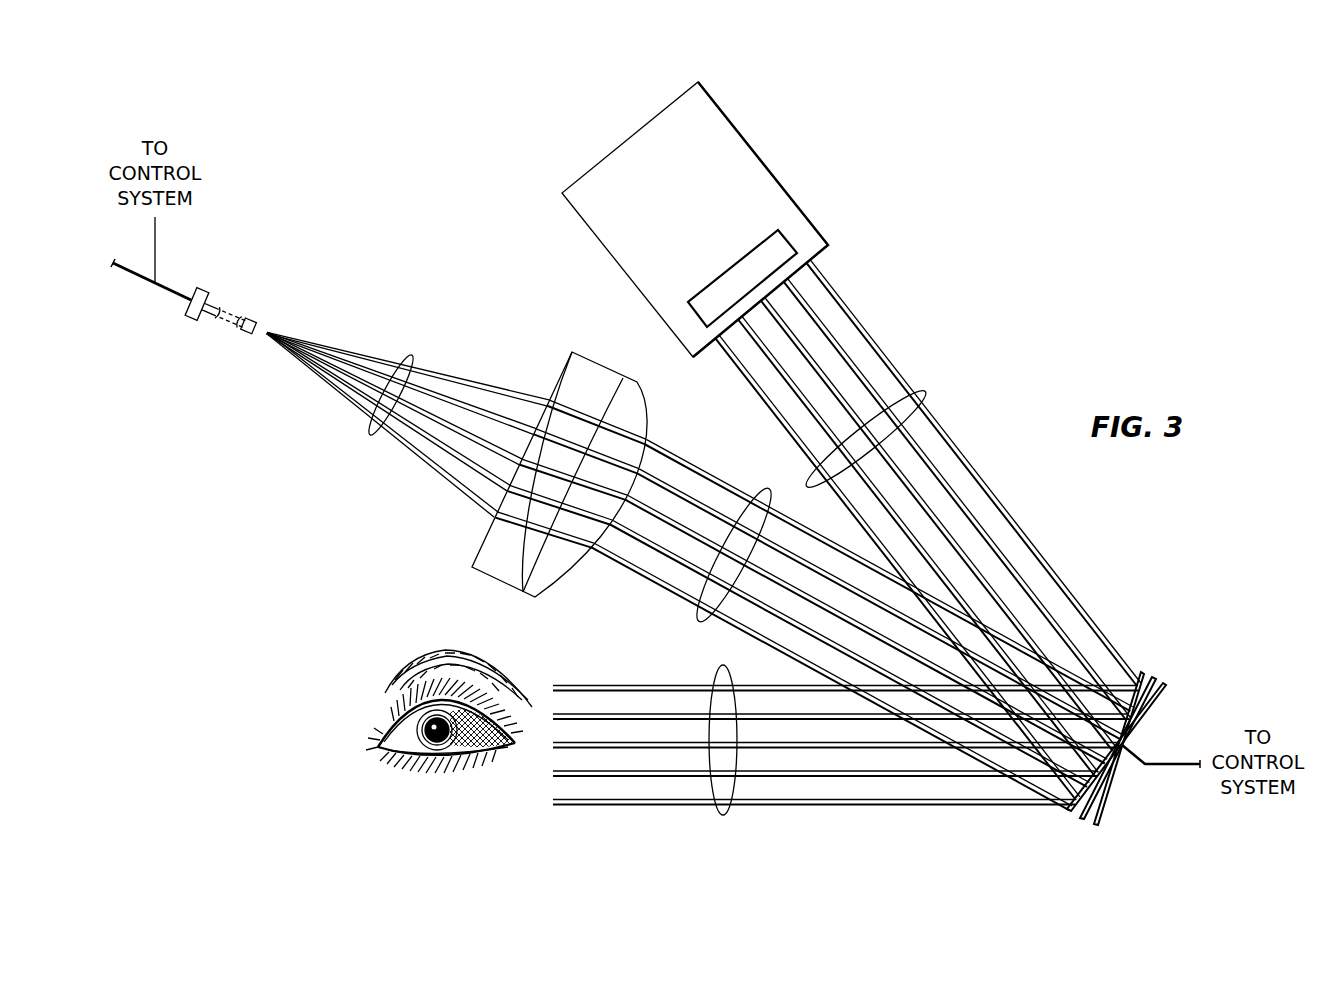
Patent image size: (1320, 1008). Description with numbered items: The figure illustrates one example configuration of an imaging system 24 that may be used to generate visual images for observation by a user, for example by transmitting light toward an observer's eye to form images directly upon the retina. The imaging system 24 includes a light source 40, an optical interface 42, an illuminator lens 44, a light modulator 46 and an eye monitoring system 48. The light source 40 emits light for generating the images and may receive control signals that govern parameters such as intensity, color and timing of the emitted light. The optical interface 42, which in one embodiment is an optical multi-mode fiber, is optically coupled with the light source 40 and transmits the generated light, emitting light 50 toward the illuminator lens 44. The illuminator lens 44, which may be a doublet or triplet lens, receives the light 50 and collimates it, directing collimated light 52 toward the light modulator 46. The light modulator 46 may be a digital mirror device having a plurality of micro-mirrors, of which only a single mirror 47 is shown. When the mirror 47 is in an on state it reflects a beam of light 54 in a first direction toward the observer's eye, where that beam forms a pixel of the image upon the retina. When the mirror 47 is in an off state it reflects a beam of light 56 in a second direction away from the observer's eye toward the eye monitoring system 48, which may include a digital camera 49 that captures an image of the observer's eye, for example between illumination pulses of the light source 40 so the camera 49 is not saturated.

The imaging system 24 is at (364, 222).
The light source 40 is at (197, 321).
The optical interface 42 is at (248, 335).
The illuminator lens 44 is at (497, 579).
The light modulator 46 is at (1172, 732).
The mirror 47 is at (1167, 688).
The eye monitoring system 48 is at (765, 160).
The digital camera 49 is at (730, 265).
The light 50 is at (402, 355).
The collimated light 52 is at (765, 492).
The beam of light 54 is at (723, 815).
The beam of light 56 is at (924, 392).